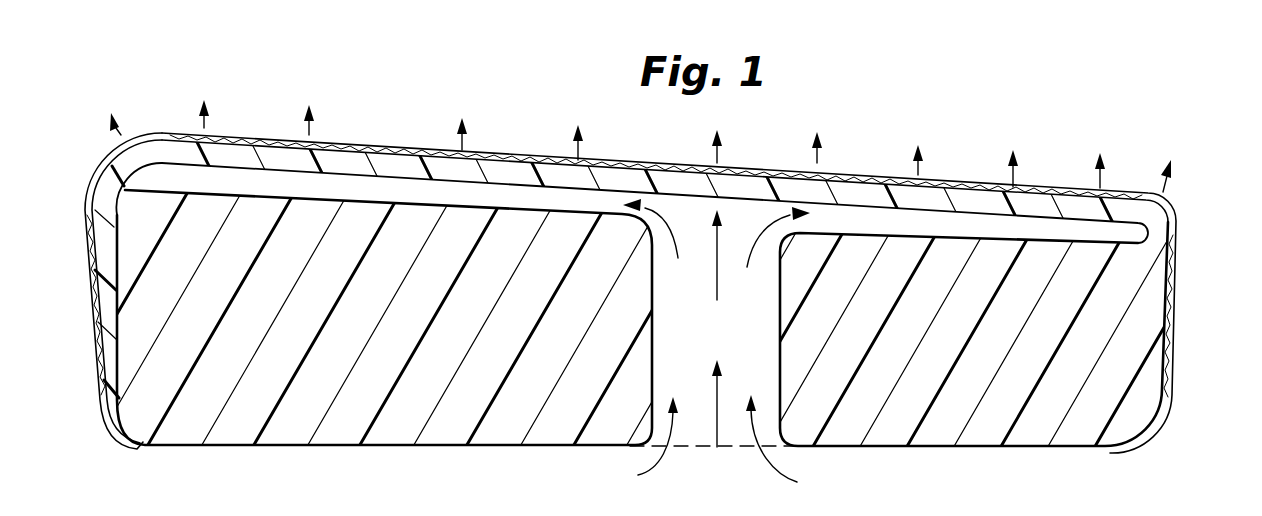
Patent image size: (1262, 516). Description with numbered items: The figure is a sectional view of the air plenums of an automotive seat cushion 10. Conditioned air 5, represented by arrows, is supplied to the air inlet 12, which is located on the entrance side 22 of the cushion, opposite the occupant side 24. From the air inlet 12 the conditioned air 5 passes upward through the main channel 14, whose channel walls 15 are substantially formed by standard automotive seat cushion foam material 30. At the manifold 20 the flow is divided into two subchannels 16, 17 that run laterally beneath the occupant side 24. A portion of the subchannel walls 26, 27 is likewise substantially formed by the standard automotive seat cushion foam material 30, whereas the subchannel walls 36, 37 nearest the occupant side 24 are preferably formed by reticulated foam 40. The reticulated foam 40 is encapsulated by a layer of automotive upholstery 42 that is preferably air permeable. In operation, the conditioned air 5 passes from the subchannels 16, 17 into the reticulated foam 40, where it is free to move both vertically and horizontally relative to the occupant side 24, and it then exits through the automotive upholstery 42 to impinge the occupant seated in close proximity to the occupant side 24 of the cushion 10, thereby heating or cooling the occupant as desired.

The conditioned air 5 is at (309, 125).
The automotive seat cushion 10 is at (635, 287).
The air inlet 12 is at (724, 450).
The main channel 14 is at (678, 330).
The channel walls 15 is at (627, 283).
The subchannel 16 is at (540, 162).
The subchannel 17 is at (943, 230).
The manifold 20 is at (686, 225).
The entrance side 22 is at (435, 445).
The occupant side 24 is at (247, 136).
The subchannel wall 26 is at (340, 190).
The subchannel wall 27 is at (1100, 243).
The standard automotive seat cushion foam material 30 is at (148, 268).
The subchannel wall 36 is at (440, 142).
The subchannel wall 37 is at (1020, 205).
The reticulated foam 40 is at (484, 163).
The automotive upholstery 42 is at (400, 136).